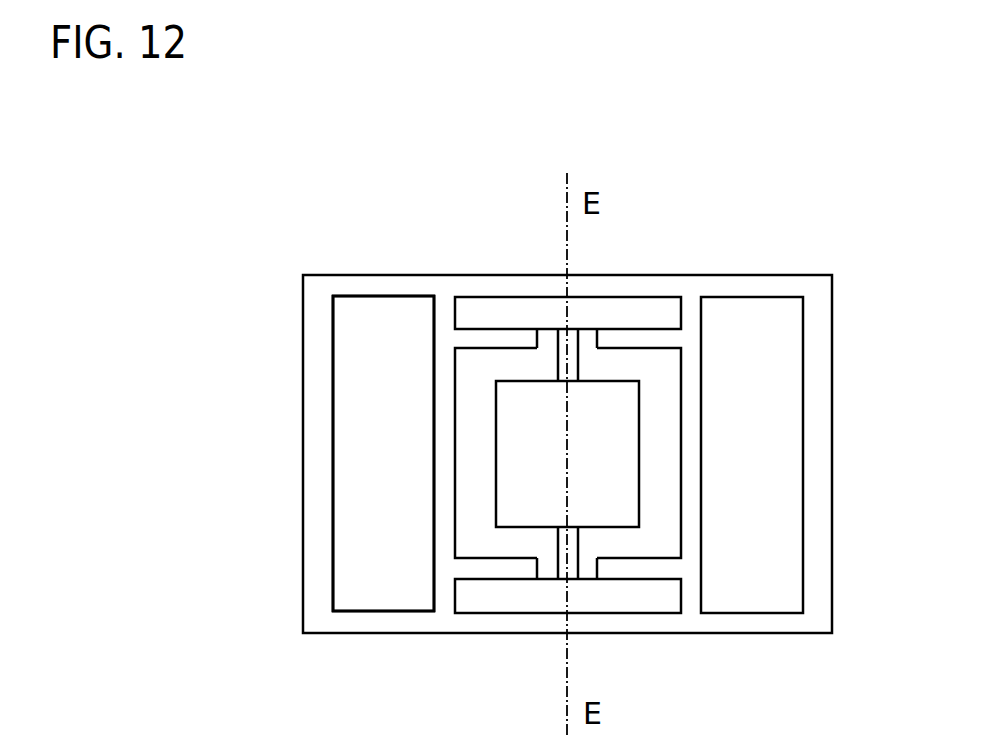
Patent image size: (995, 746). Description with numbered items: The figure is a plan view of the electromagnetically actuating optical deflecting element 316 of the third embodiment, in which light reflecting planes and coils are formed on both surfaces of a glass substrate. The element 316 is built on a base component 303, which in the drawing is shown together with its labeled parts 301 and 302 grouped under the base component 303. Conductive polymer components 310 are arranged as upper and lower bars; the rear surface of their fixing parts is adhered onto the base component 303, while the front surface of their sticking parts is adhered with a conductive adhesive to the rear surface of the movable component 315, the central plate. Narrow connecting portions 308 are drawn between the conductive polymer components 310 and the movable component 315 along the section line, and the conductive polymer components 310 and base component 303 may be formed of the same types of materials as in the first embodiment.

The electrode 301 is at (370, 296).
The electrode layer 302 is at (330, 372).
The base component 303 is at (154, 200).
The connecting frame 308 is at (553, 362).
The conductive polymer components 310 is at (628, 297).
The movable component 315 is at (510, 381).
The electromagnetically actuating optical deflecting element 316 is at (863, 267).